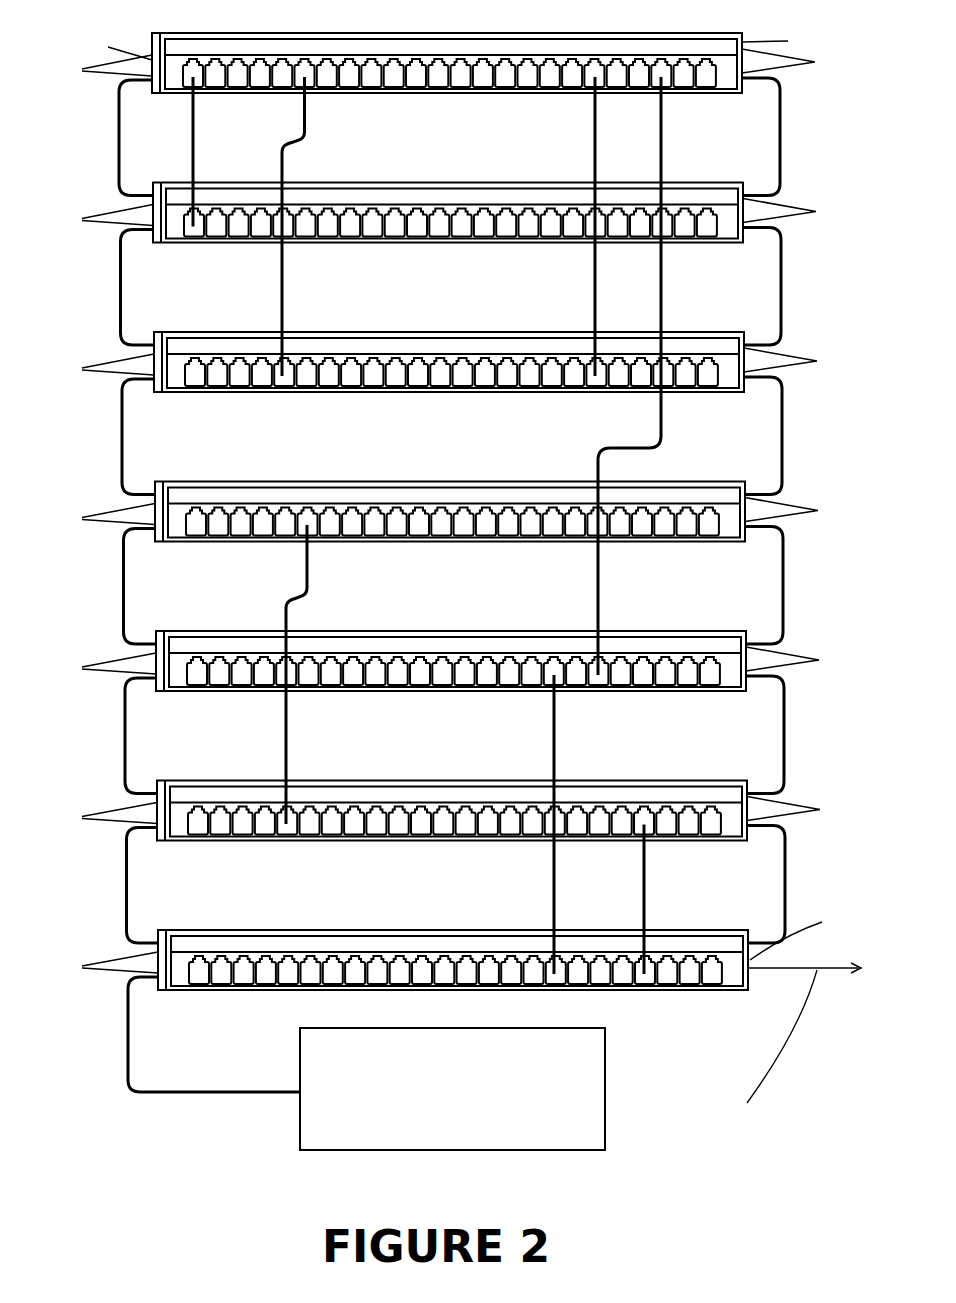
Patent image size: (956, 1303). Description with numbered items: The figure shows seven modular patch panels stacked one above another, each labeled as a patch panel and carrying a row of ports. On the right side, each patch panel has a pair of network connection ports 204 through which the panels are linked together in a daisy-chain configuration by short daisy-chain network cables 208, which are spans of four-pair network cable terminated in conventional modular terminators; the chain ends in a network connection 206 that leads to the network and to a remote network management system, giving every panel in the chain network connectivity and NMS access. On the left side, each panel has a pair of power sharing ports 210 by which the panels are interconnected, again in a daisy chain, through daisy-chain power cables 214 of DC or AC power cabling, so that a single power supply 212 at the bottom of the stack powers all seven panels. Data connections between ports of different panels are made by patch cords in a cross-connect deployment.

The network connection ports 204 is at (810, 500).
The network connection 206 is at (836, 970).
The daisy-chain network cables 208 is at (803, 886).
The power sharing ports 210 is at (94, 511).
The power supply 212 is at (300, 1136).
The daisy-chain power cables 214 is at (126, 1042).